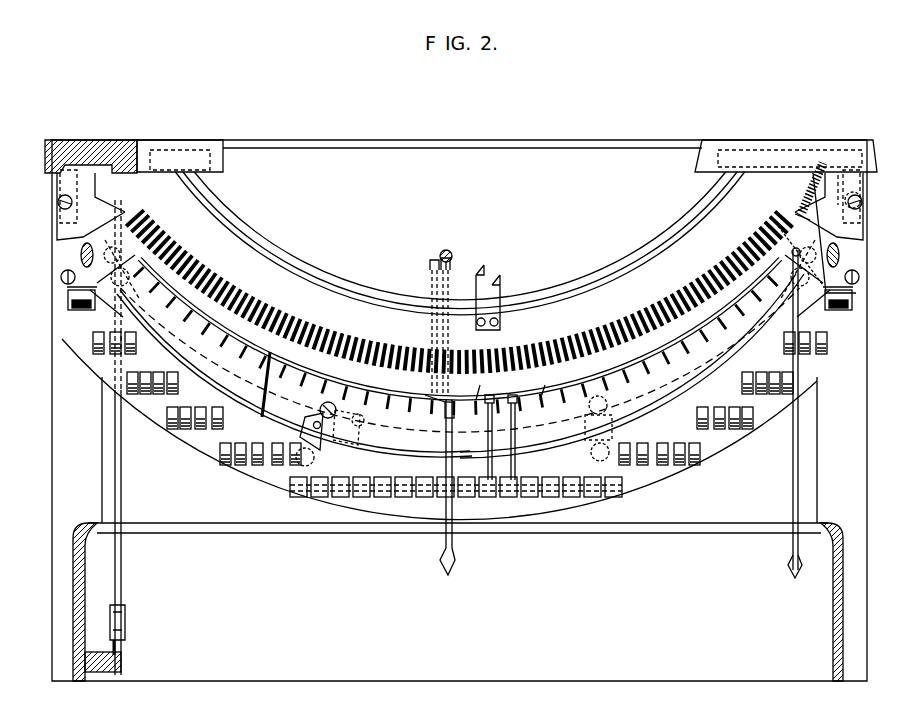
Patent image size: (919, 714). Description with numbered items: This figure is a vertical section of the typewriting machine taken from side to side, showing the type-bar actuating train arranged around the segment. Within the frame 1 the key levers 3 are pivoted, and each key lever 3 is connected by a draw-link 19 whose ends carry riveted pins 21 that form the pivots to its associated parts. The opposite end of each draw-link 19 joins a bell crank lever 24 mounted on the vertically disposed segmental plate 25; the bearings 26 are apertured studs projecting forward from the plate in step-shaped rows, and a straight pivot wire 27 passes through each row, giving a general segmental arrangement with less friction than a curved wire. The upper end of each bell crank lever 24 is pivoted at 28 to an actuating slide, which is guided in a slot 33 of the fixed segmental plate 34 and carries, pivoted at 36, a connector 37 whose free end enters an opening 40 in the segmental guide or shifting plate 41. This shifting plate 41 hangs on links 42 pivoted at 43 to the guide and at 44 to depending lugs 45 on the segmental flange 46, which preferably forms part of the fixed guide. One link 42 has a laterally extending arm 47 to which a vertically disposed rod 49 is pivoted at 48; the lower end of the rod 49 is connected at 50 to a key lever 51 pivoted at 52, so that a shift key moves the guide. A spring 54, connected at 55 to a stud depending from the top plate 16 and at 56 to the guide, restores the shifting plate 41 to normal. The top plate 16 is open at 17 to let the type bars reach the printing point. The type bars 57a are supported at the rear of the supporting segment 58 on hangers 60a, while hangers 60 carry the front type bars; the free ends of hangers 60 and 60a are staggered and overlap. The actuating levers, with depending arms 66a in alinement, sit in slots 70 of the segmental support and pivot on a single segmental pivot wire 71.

The frame 1 is at (840, 620).
The key lever 3 is at (443, 562).
The top plate 16 is at (728, 146).
The opening in top plate 17 is at (222, 165).
The draw-link 19 is at (800, 440).
The pin 21 is at (453, 478).
The bell crank lever 24 is at (492, 448).
The segmental plate 25 is at (652, 480).
The bearings 26 is at (290, 482).
The pivot wire 27 is at (382, 490).
The pivot 28 is at (455, 420).
The slot 33 is at (235, 350).
The fixed segmental plate 34 is at (460, 344).
The pivot 36 is at (440, 395).
The connector 37 is at (432, 425).
The opening 40 is at (305, 420).
The segmental guide or shifting plate 41 is at (320, 408).
The link 42 is at (78, 262).
The pivot 43 is at (112, 252).
The pivot 44 is at (62, 280).
The depending lugs 45 is at (80, 253).
The segmental flange 46 is at (260, 418).
The laterally extending arm 47 is at (100, 298).
The pivot 48 is at (121, 278).
The rod 49 is at (121, 570).
The connection 50 is at (126, 620).
The key lever 51 is at (118, 652).
The pivot 52 is at (124, 662).
The spring 54 is at (808, 190).
The spring end connection 55 is at (826, 158).
The spring end connection 56 is at (806, 218).
The type bar 57a is at (452, 257).
The supporting segment 58 is at (460, 267).
The hanger 60 is at (486, 276).
The hanger 60a is at (431, 297).
The depending arm 66a is at (455, 397).
The slot 70 is at (422, 392).
The segmental pivot wire 71 is at (692, 292).